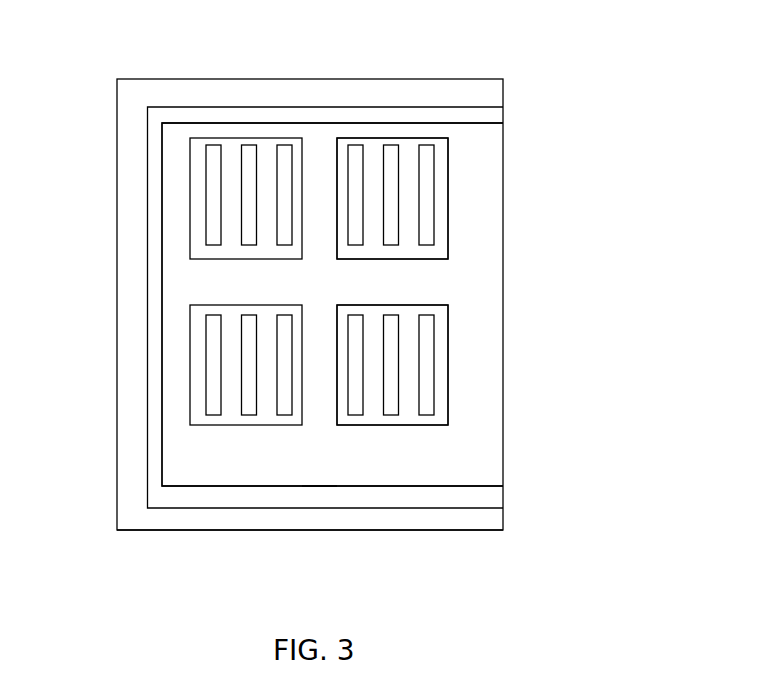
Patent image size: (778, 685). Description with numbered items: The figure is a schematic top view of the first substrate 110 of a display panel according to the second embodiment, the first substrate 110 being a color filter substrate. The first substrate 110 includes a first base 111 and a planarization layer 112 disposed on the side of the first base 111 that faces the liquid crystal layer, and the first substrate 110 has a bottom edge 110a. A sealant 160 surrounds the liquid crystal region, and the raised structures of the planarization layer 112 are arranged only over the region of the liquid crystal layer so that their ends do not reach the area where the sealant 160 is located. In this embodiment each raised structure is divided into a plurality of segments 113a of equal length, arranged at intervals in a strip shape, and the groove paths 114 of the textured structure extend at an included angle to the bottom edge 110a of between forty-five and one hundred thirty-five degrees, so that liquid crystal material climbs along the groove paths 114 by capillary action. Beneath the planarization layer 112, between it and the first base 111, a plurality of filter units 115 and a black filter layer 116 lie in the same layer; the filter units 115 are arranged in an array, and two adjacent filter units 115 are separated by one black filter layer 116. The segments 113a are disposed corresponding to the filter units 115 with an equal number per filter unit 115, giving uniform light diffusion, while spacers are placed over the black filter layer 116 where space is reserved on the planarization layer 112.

The first substrate 110 is at (338, 60).
The bottom edge 110a is at (443, 530).
The first base 111 is at (132, 234).
The sealant 160 is at (492, 115).
The planarization layer 112 is at (480, 157).
The segment 113a is at (430, 203).
The groove path 114 is at (412, 220).
The filter unit 115 is at (433, 260).
The black filter layer 116 is at (317, 408).